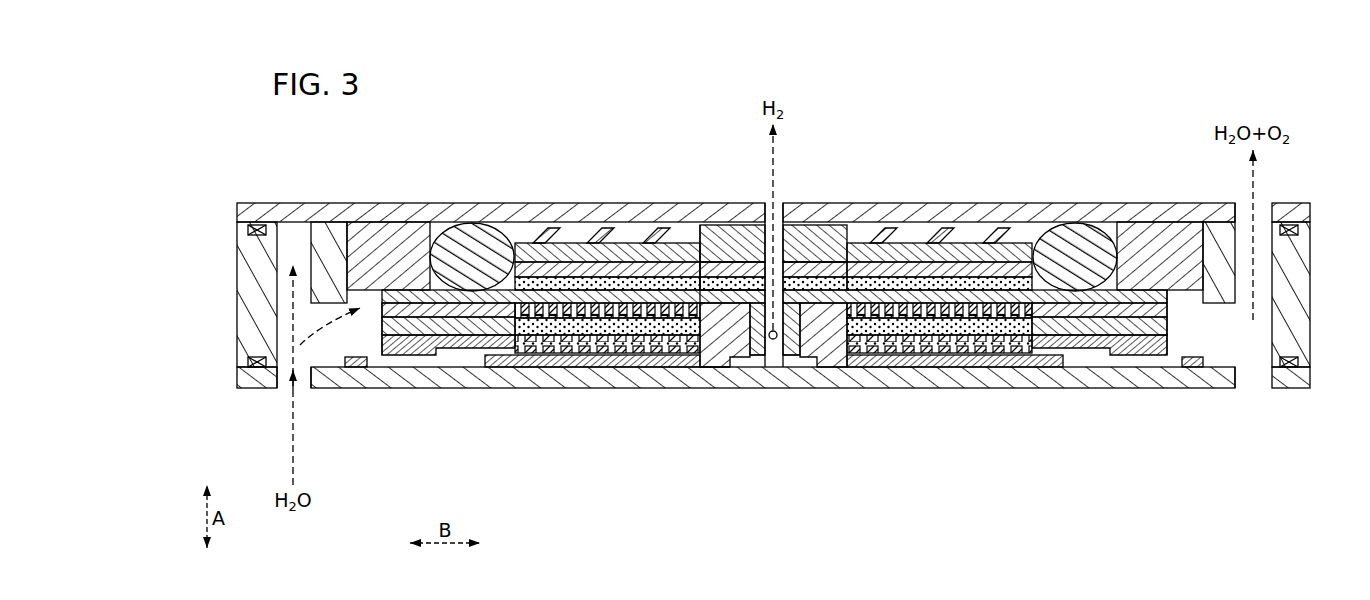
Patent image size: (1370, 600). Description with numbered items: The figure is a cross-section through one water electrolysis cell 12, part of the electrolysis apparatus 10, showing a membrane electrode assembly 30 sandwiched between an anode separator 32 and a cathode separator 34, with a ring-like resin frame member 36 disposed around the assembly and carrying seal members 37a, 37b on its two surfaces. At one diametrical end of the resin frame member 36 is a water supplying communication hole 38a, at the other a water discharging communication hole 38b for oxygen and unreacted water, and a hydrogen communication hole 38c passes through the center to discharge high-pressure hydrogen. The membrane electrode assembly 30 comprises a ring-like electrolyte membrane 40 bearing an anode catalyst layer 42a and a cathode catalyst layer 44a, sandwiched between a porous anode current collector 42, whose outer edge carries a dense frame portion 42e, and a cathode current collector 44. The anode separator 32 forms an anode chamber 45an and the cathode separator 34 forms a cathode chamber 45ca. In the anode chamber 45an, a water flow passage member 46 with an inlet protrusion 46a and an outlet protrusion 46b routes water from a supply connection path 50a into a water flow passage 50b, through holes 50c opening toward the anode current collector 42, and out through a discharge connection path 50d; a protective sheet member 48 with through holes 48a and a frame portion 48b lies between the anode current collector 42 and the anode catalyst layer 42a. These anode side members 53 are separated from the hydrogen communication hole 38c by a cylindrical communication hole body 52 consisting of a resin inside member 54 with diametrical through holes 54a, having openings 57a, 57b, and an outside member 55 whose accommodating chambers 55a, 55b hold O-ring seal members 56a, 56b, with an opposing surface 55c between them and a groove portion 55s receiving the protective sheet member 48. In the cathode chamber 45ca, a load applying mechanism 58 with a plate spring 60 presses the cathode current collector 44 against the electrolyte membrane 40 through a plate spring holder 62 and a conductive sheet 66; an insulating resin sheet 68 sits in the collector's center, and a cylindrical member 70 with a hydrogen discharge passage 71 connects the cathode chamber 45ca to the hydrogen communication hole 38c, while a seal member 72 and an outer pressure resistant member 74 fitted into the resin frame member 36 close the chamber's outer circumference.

The hydrogen generation apparatus 10 is at (749, 294).
The water electrolysis cell 12 is at (773, 262).
The membrane electrode assembly 30 is at (573, 311).
The anode separator 32 is at (1287, 389).
The cathode separator 34 is at (1287, 202).
The resin frame member 36 is at (236, 333).
The seal member 37a is at (258, 225).
The seal member 37b is at (258, 367).
The water supplying communication hole 38a is at (298, 389).
The water discharging communication hole 38b is at (1253, 389).
The hydrogen communication hole 38c is at (778, 345).
The solid polymer electrolyte membrane 40 is at (496, 203).
The anode current collector 42 is at (573, 378).
The anode catalyst layer 42a is at (553, 368).
The frame portion 42e is at (477, 368).
The cathode current collector 44 is at (584, 203).
The cathode catalyst layer 44a is at (553, 203).
The cathode chamber 45ca is at (600, 203).
The anode chamber 45an is at (378, 368).
The water flow passage member 46 is at (523, 368).
The inlet protrusion 46a is at (353, 368).
The outlet protrusion 46b is at (1190, 368).
The protective sheet member 48 is at (1097, 356).
The through holes 48a is at (1017, 368).
The frame portion 48b is at (1140, 368).
The supply connection path 50a is at (421, 368).
The water flow passage 50b is at (612, 368).
The holes 50c is at (652, 368).
The discharge connection path 50d is at (1160, 368).
The communication hole body 52 is at (812, 368).
The anode side members 53 is at (1170, 327).
The inside member 54 is at (708, 368).
The through holes 54a is at (793, 225).
The outside member 55 is at (840, 368).
The accommodating chamber 55a is at (748, 203).
The accommodating chamber 55b is at (748, 368).
The opposing surface 55c is at (768, 368).
The groove portion 55s is at (702, 203).
The seal member 56a is at (733, 225).
The seal member 56b is at (730, 368).
The opening 57a is at (826, 203).
The opening 57b is at (776, 368).
The load applying mechanism 58 is at (962, 203).
The plate spring 60 is at (888, 203).
The plate spring holder 62 is at (925, 203).
The conductive sheet 66 is at (1015, 203).
The resin sheet 68 is at (707, 203).
The cylindrical member 70 is at (840, 203).
The hydrogen discharge passage 71 is at (720, 203).
The seal member 72 is at (468, 203).
The pressure resistant member 74 is at (371, 203).